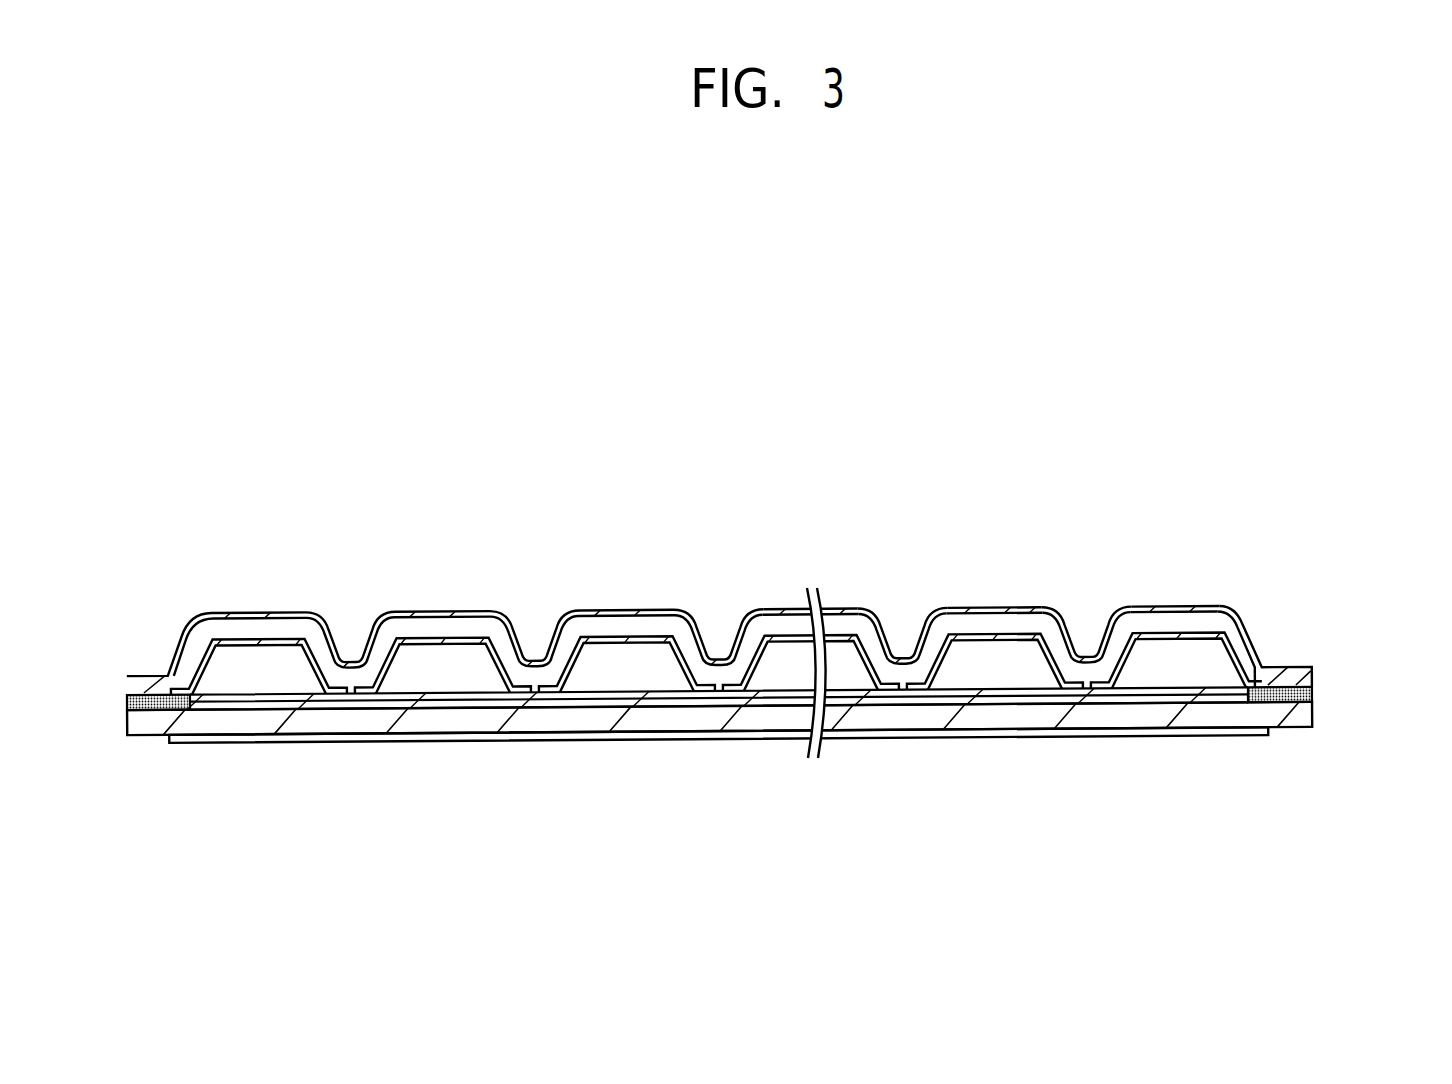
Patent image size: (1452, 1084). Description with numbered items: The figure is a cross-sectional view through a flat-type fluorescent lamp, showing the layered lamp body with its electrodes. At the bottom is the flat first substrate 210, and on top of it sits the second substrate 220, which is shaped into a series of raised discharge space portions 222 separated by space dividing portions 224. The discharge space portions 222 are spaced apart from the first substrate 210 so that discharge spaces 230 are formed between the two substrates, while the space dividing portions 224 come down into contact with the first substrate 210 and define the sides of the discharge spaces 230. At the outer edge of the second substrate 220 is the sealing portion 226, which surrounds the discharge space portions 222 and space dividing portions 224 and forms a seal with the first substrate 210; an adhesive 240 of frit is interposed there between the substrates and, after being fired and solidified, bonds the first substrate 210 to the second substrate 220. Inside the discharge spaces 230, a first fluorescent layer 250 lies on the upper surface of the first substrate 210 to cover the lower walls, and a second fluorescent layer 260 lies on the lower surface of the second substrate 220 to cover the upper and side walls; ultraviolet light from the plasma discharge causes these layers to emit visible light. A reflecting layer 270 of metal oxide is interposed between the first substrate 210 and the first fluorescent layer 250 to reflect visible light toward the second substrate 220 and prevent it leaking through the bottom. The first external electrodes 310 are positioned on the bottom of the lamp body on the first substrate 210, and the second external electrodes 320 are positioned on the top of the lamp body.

The first substrate 210 is at (1316, 713).
The second substrate 220 is at (1316, 673).
The discharge space portions 222 is at (1167, 618).
The space dividing portions 224 is at (1088, 666).
The sealing portion 226 is at (1286, 672).
The discharge spaces 230 is at (1000, 660).
The adhesive 240 is at (1316, 690).
The first fluorescent layer 250 is at (949, 697).
The second fluorescent layer 260 is at (853, 608).
The reflecting layer 270 is at (900, 691).
The first external electrodes 310 is at (1017, 736).
The second external electrodes 320 is at (938, 617).